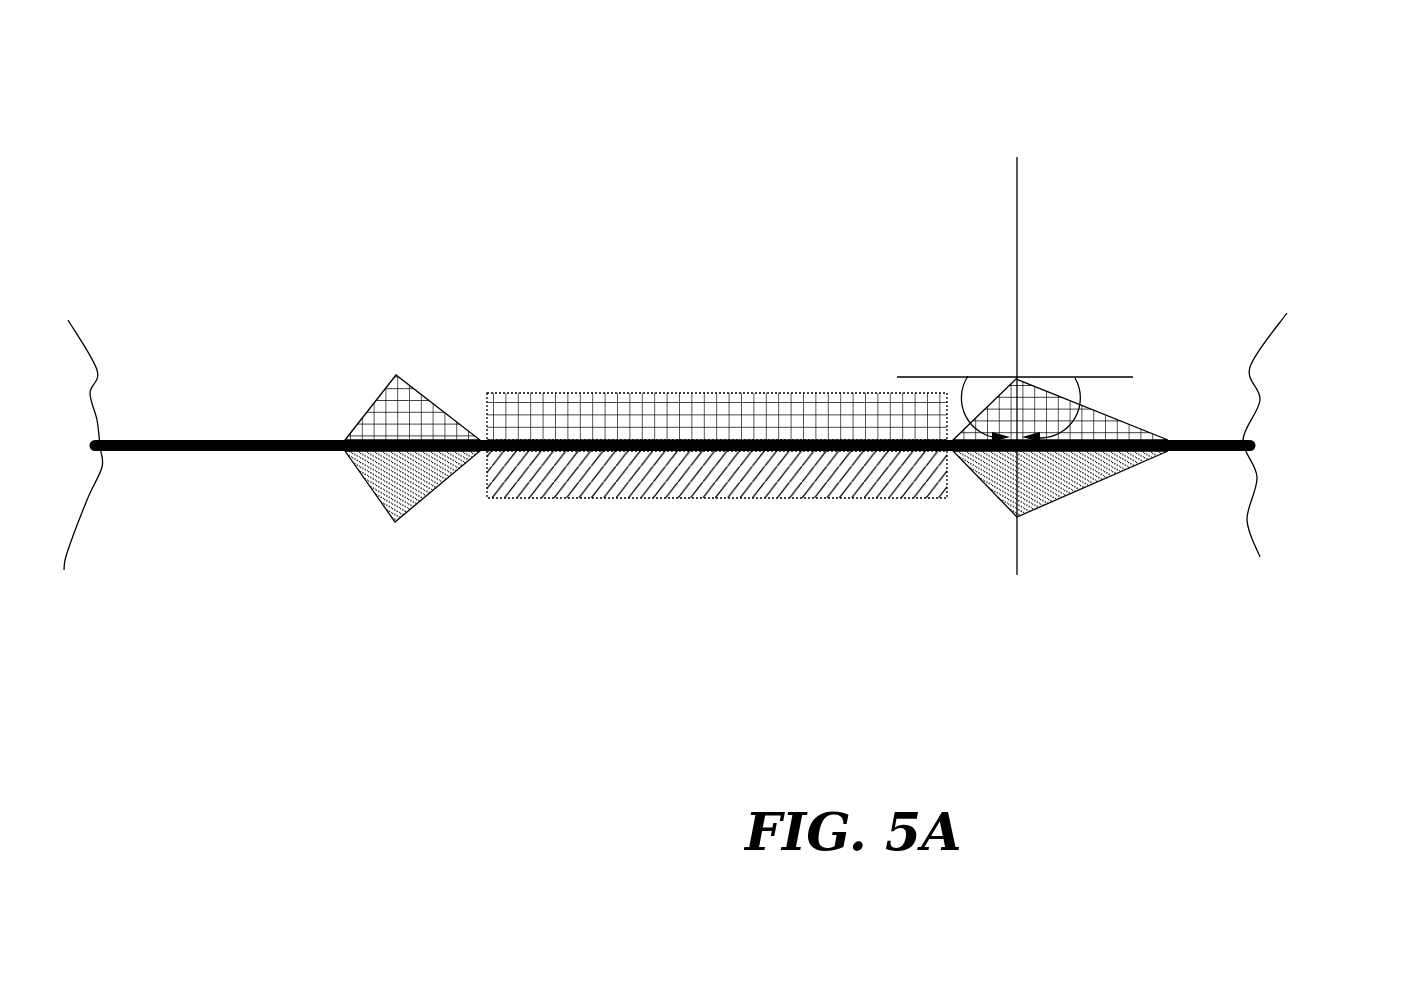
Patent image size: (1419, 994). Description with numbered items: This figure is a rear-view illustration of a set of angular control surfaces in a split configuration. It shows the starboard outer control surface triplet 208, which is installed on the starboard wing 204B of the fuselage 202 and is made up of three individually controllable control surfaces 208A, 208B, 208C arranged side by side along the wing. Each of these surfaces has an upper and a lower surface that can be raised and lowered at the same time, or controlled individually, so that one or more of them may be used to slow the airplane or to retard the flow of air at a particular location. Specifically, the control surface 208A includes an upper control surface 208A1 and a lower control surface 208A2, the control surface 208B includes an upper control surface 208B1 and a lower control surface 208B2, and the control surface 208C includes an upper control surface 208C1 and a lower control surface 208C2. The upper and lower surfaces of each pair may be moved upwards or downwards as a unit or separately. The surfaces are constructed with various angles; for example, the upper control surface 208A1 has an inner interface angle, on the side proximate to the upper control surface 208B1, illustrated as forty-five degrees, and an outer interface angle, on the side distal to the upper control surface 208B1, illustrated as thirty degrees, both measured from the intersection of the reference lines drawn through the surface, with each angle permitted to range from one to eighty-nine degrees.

The fuselage 202 is at (748, 232).
The starboard wing 204B is at (1200, 440).
The starboard outer control surface triplet 208 is at (663, 596).
The individually controllable control surface 208A is at (1001, 378).
The upper control surface 208A1 is at (1003, 405).
The lower control surface 208A2 is at (1015, 477).
The individually controllable control surface 208B is at (717, 379).
The upper control surface 208B1 is at (668, 407).
The lower control surface 208B2 is at (682, 474).
The individually controllable control surface 208C is at (342, 386).
The upper control surface 208C1 is at (387, 417).
The lower control surface 208C2 is at (397, 487).